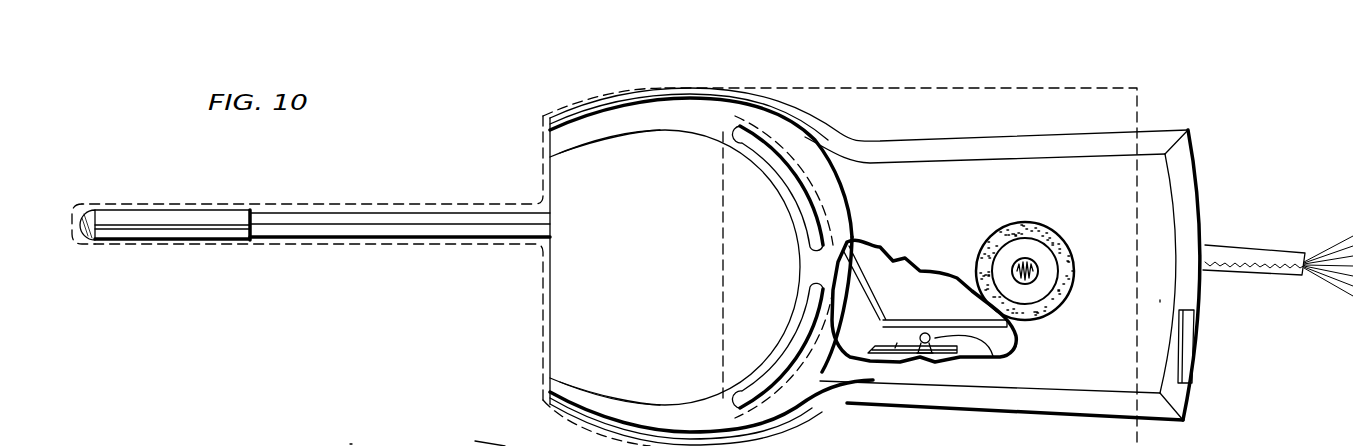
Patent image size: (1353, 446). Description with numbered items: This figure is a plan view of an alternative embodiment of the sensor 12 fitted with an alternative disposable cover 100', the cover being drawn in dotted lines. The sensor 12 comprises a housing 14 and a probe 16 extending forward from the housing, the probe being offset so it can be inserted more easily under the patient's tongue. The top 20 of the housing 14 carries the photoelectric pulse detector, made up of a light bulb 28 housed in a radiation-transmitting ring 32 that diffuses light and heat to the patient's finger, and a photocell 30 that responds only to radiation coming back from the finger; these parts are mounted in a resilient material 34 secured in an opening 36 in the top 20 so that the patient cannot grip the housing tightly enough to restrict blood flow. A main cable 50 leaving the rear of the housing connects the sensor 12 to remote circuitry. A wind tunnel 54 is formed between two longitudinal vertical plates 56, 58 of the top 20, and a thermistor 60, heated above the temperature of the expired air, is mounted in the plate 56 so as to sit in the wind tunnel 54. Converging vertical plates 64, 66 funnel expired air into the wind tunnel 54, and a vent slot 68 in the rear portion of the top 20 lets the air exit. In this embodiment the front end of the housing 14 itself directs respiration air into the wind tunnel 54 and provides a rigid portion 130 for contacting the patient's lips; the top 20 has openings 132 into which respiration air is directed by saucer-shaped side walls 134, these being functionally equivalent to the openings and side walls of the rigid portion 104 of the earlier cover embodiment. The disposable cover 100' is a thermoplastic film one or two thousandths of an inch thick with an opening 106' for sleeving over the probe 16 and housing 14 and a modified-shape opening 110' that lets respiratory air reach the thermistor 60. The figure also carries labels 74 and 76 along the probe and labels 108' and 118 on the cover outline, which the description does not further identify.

The sensor 12 is at (574, 85).
The housing 14 is at (1084, 133).
The probe 16 is at (315, 184).
The top 20 is at (1165, 230).
The light bulb 28 is at (1043, 267).
The photocell 30 is at (1036, 265).
The radiation-transmitting ring 32 is at (1045, 281).
The resilient material 34 is at (1023, 225).
The opening 36 is at (1030, 313).
The main cable 50 is at (1256, 246).
The wind tunnel 54 is at (992, 354).
The vertical plate 56 is at (895, 350).
The vertical plate 58 is at (893, 325).
The thermistor 60 is at (927, 333).
The vertical plate 64 is at (862, 259).
The vertical plate 66 is at (869, 352).
The vent slot 68 is at (1198, 340).
The rod 74 is at (430, 215).
The tip tube 76 is at (170, 210).
The disposable cover 100' is at (901, 249).
The rigid portion 104 is at (368, 431).
The opening 106' is at (655, 136).
The probe cover outline 108' is at (361, 325).
The opening 110' is at (695, 267).
The cover seam 118 is at (475, 441).
The rigid portion 130 is at (570, 262).
The openings 132 is at (798, 228).
The saucer-shaped side walls 134 is at (656, 131).